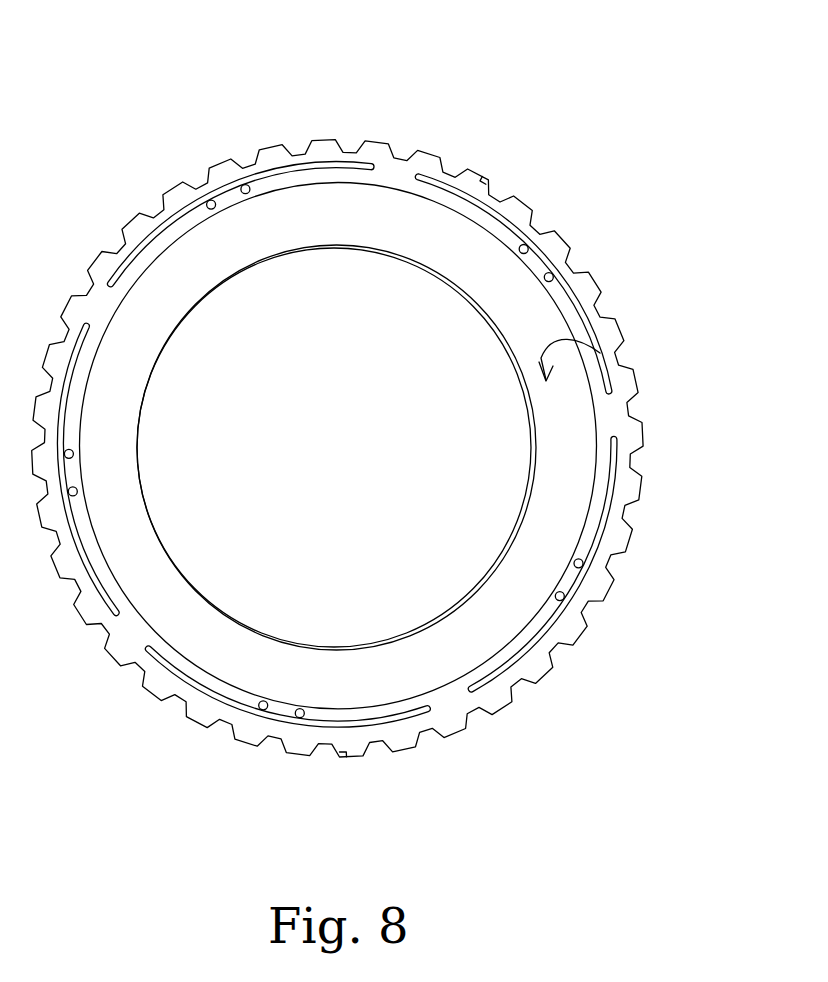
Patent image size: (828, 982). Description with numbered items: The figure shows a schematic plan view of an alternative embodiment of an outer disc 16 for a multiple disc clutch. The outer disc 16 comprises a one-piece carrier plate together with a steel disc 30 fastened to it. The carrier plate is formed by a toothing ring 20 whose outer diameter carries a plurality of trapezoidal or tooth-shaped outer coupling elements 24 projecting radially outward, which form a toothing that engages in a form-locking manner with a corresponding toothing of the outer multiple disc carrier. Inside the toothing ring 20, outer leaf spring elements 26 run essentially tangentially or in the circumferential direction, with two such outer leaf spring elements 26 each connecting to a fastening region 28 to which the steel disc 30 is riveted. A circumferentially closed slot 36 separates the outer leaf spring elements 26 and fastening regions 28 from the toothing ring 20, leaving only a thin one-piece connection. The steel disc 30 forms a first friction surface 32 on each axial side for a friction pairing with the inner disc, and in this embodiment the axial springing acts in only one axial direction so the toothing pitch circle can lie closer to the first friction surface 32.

The outer disc 16 is at (101, 90).
The toothing ring 20 is at (248, 163).
The outer coupling elements 24 is at (277, 135).
The outer leaf spring elements 26 is at (163, 240).
The fastening region 28 is at (287, 716).
The steel disc 30 is at (388, 224).
The first friction surface 32 is at (590, 355).
The circumferentially closed slot 36 is at (484, 172).